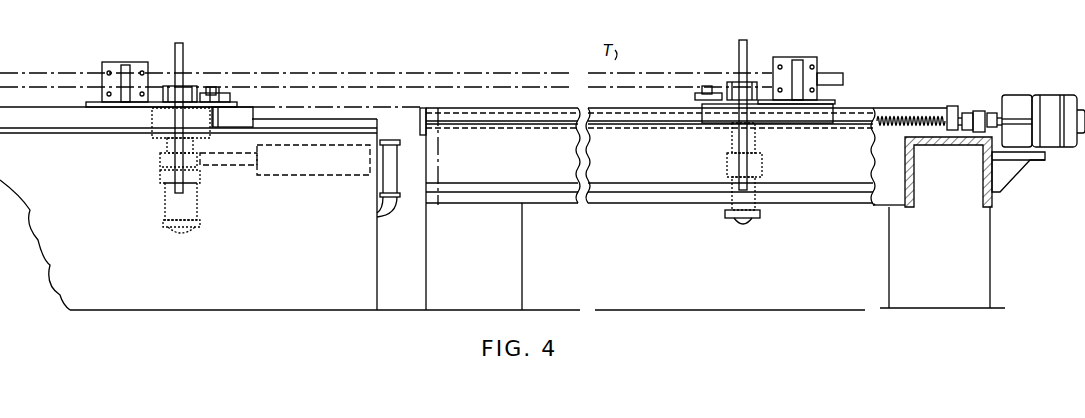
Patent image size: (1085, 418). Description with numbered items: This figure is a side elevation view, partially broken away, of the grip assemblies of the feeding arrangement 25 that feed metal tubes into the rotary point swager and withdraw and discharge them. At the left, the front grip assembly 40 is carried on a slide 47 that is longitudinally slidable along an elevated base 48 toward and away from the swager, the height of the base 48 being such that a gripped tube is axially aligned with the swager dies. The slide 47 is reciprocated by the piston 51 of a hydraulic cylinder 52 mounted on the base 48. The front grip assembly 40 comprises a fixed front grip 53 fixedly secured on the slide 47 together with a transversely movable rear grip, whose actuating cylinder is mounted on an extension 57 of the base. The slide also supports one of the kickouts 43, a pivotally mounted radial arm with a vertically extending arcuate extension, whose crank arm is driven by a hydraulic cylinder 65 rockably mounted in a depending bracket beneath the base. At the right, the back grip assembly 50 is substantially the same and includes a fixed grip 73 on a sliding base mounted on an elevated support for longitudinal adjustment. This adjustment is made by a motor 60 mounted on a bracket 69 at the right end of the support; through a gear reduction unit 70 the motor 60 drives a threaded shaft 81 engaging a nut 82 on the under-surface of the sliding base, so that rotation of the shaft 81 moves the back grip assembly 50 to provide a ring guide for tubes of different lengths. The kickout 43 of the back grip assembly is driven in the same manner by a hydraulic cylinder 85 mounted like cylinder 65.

The feeding arrangement 25 is at (421, 296).
The front grip assembly 40 is at (108, 58).
The kickout 43 is at (184, 50).
The slide 47 is at (232, 102).
The elevated base 48 is at (206, 290).
The back grip assembly 50 is at (817, 63).
The piston 51 is at (240, 166).
The hydraulic cylinder 52 is at (313, 165).
The fixed front grip 53 is at (137, 97).
The extension of base 57 is at (817, 112).
The motor 60 is at (1052, 95).
The hydraulic cylinder 65 is at (172, 203).
The bracket 69 is at (1022, 187).
The gear reduction unit 70 is at (1014, 95).
The fixed grip 73 is at (837, 77).
The threaded shaft 81 is at (905, 115).
The nut 82 is at (762, 130).
The hydraulic cylinder 85 is at (755, 210).